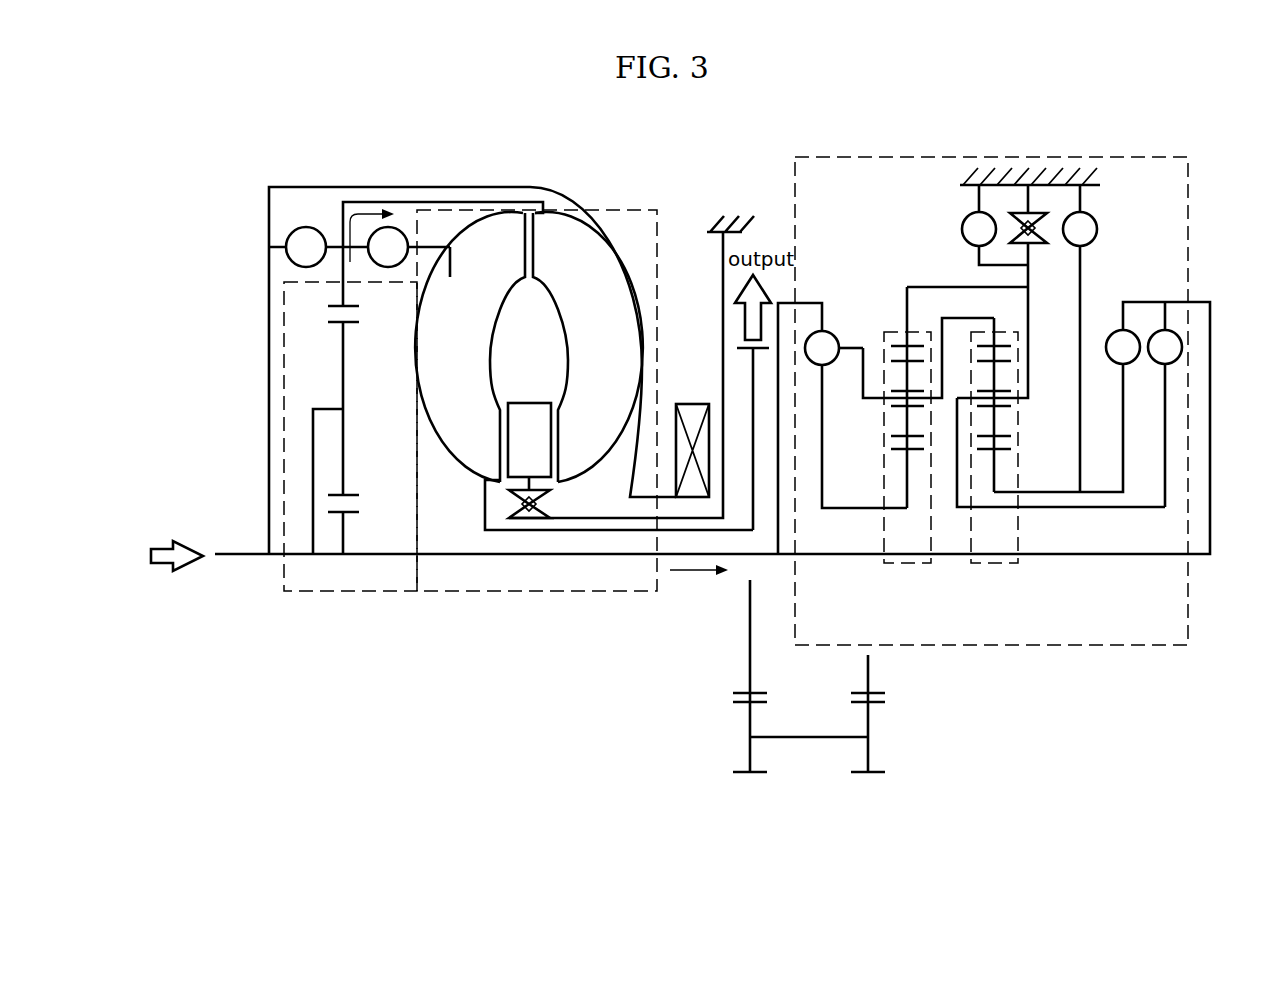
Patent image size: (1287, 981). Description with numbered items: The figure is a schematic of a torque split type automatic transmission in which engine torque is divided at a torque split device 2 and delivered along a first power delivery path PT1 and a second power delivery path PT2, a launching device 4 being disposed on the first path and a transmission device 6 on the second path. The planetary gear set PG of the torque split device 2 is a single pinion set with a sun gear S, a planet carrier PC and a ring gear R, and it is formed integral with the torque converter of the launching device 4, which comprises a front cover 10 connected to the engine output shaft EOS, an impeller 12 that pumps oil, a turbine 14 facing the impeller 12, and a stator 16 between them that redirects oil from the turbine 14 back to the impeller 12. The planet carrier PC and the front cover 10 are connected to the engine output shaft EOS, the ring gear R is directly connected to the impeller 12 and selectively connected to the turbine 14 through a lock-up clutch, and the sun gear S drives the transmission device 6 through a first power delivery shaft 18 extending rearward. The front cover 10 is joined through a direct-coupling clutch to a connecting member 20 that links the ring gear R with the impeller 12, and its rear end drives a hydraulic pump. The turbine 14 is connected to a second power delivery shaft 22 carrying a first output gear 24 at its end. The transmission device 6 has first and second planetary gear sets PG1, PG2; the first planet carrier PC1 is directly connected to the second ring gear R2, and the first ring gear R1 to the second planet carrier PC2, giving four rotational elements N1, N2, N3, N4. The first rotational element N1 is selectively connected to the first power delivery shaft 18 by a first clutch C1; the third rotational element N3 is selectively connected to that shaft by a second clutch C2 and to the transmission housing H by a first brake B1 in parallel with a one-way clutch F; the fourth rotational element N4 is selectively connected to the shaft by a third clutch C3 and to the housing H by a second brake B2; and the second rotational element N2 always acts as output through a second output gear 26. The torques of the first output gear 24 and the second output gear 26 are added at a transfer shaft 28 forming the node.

The torque split device 2 is at (301, 600).
The launching device 4 is at (465, 602).
The transmission device 6 is at (1198, 176).
The front cover 10 is at (268, 432).
The impeller 12 is at (567, 257).
The turbine 14 is at (503, 240).
The stator 16 is at (520, 450).
The first power delivery shaft 18 is at (550, 556).
The connecting member 20 is at (397, 202).
The second power delivery shaft 22 is at (600, 532).
The first output gear 24 is at (753, 375).
The second output gear 26 is at (857, 347).
The transfer shaft 28 is at (809, 748).
The ring gear R is at (330, 306).
The planetary gear set PG is at (332, 374).
The planet carrier PC is at (325, 407).
The sun gear S is at (377, 535).
The first power delivery path PT1 is at (369, 246).
The second power delivery path PT2 is at (699, 584).
The output shaft of the engine EOS is at (235, 558).
The first clutch C1 is at (842, 428).
The second clutch C2 is at (1165, 404).
The third clutch C3 is at (994, 428).
The first brake B1 is at (995, 225).
The second brake B2 is at (1080, 338).
The transmission housing H is at (1000, 168).
The one-way clutch F is at (1040, 200).
The first planetary gear set PG1 is at (906, 575).
The second planetary gear set PG2 is at (994, 575).
The first ring gear R1 is at (902, 345).
The second ring gear R2 is at (1000, 345).
The first planet carrier PC1 is at (872, 400).
The second planet carrier PC2 is at (1025, 400).
The first rotational element N1 is at (898, 452).
The second rotational element N2 is at (942, 376).
The third rotational element N3 is at (942, 285).
The fourth rotational element N4 is at (1007, 450).